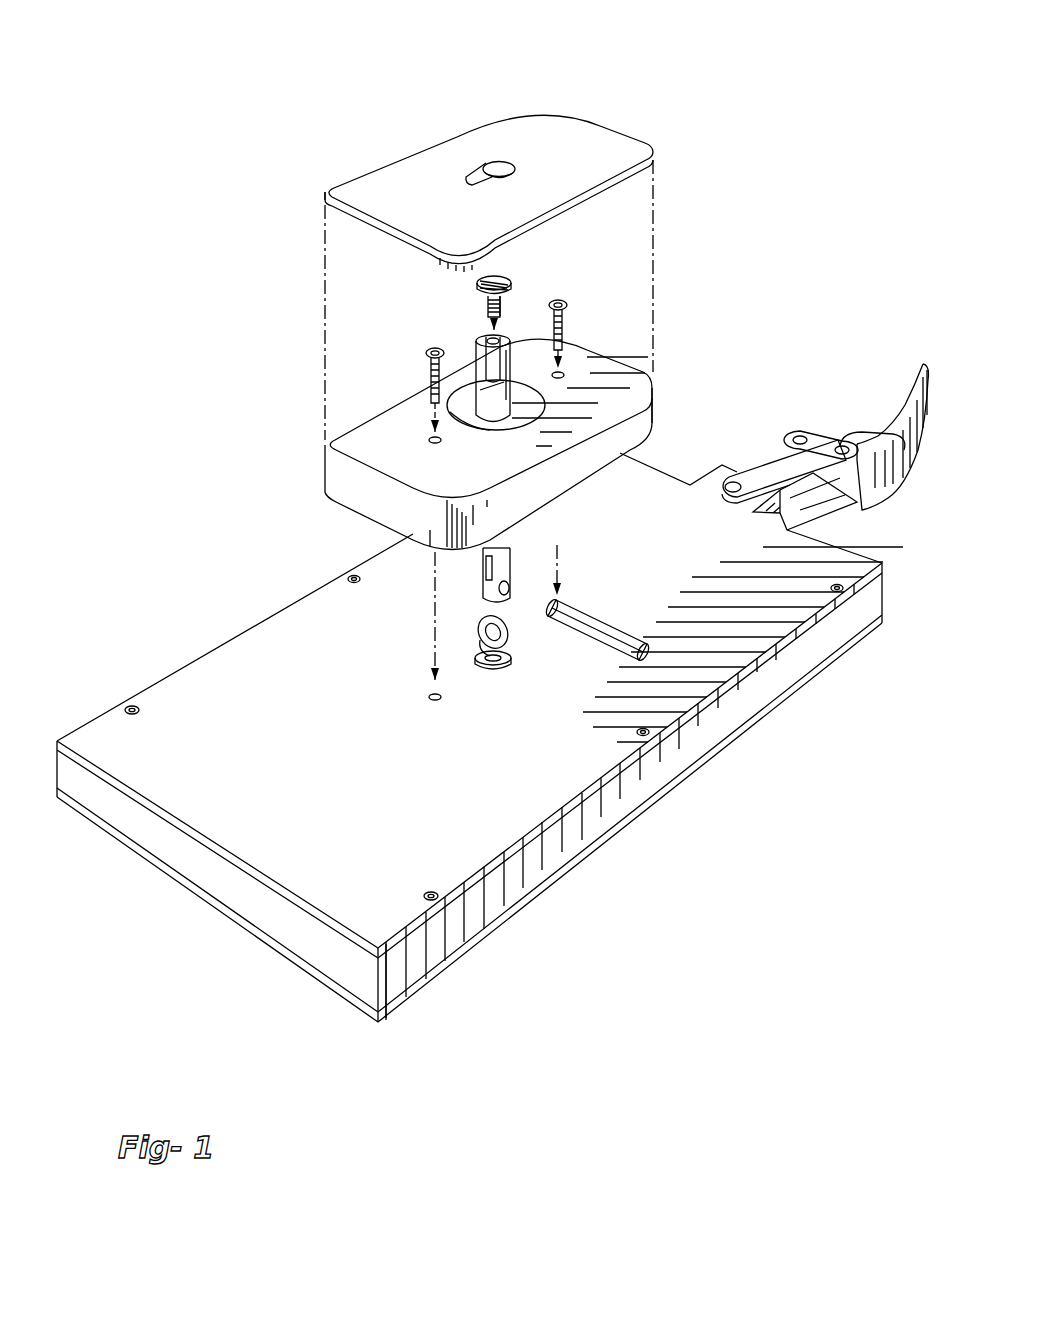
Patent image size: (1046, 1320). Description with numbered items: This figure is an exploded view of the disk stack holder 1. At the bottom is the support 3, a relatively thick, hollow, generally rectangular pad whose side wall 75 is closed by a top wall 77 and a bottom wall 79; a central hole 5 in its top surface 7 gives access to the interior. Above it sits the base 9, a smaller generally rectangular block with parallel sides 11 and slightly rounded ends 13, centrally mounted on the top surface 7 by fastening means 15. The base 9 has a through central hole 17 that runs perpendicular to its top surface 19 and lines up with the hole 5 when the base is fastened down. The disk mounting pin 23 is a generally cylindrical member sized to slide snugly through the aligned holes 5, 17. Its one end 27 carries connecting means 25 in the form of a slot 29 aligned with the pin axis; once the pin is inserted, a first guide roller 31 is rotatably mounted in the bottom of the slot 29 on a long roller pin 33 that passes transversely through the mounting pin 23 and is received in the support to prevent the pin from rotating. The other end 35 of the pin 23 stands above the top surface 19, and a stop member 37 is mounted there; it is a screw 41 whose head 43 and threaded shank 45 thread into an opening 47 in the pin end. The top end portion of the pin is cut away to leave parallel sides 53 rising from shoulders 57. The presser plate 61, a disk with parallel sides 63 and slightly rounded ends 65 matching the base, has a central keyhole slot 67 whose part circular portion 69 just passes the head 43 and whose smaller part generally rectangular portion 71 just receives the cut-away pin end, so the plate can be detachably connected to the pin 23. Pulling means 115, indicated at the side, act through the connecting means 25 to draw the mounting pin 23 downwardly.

The disk stack holder 1 is at (200, 82).
The support 3 is at (183, 658).
The central hole 5 is at (493, 665).
The top surface 7 is at (688, 690).
The base 9 is at (320, 457).
The parallel sides 11 is at (342, 412).
The slightly rounded ends 13 is at (347, 475).
The fastening means 15 is at (470, 366).
The through central hole 17 is at (475, 412).
The top surface 19 is at (637, 377).
The disk mounting pin 23 is at (515, 545).
The connecting means 25 is at (485, 598).
The one end 27 is at (500, 592).
The slot 29 is at (477, 563).
The first guide roller 31 is at (480, 630).
The roller pin 33 is at (612, 637).
The other end 35 is at (529, 326).
The stop member 37 is at (530, 273).
The screw 41 is at (482, 299).
The head 43 is at (530, 253).
The threaded shank 45 is at (505, 290).
The opening 47 is at (492, 338).
The parallel sides 53 is at (478, 355).
The shoulders 57 is at (476, 372).
The presser plate 61 is at (323, 186).
The parallel sides 63 is at (387, 164).
The slightly rounded ends 65 is at (350, 243).
The keyhole slot 67 is at (520, 173).
The part circular portion 69 is at (465, 138).
The part generally rectangular portion 71 is at (324, 193).
The side wall 75 is at (663, 770).
The top wall 77 is at (668, 733).
The bottom wall 79 is at (610, 833).
The pulling means 115 is at (860, 388).